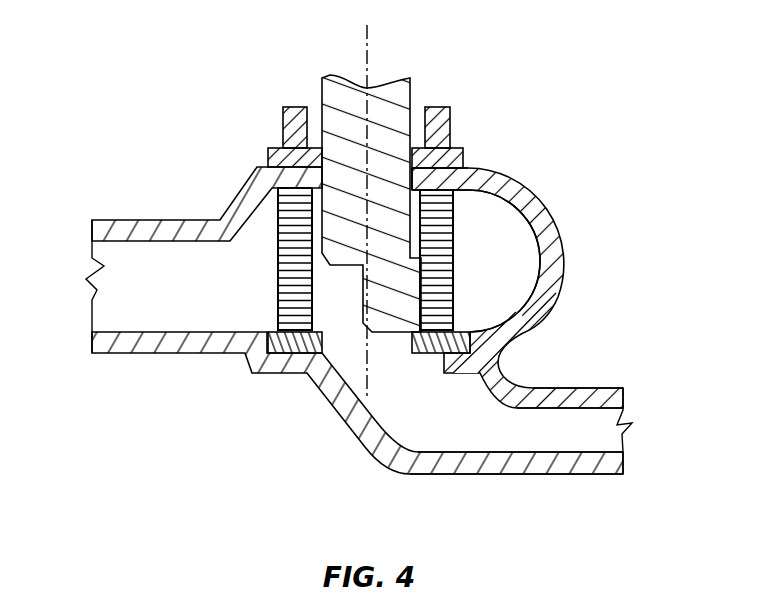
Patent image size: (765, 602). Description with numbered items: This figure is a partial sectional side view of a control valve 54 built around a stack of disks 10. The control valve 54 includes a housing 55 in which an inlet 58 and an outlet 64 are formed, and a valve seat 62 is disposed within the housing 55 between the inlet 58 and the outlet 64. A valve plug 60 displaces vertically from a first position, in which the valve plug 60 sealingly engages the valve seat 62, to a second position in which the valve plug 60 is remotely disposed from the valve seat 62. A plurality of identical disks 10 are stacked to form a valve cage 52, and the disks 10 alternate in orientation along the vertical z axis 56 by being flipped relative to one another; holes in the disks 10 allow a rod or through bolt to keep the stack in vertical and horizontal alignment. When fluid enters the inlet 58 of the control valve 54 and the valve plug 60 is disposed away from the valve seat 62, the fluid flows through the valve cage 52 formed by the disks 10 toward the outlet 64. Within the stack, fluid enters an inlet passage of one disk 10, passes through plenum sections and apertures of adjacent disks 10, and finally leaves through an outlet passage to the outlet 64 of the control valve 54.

The disk 10 is at (386, 253).
The valve cage 52 is at (455, 243).
The control valve 54 is at (545, 48).
The housing 55 is at (517, 268).
The z axis 56 is at (367, 42).
The inlet 58 is at (605, 442).
The valve plug 60 is at (473, 168).
The valve seat 62 is at (425, 357).
The outlet 64 is at (100, 266).